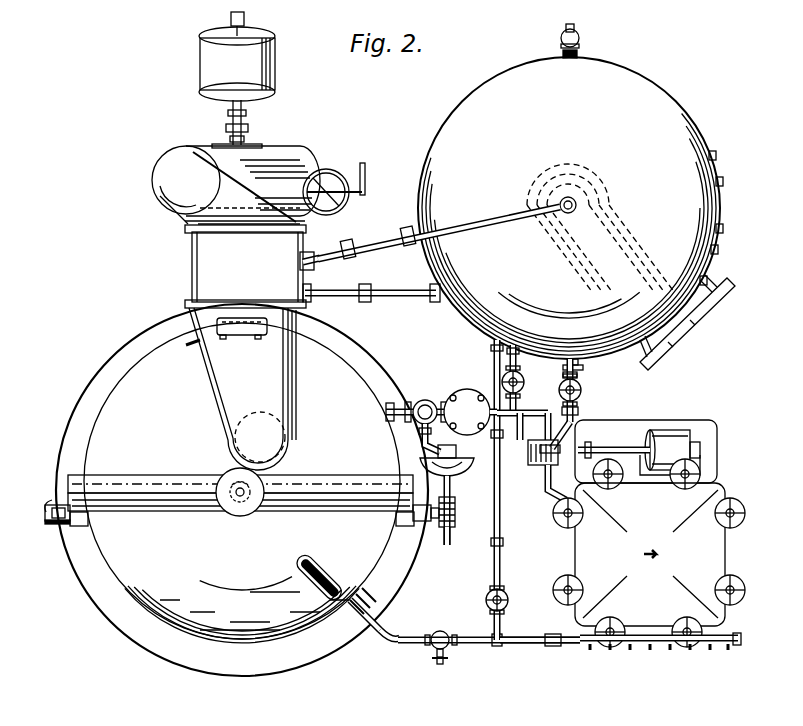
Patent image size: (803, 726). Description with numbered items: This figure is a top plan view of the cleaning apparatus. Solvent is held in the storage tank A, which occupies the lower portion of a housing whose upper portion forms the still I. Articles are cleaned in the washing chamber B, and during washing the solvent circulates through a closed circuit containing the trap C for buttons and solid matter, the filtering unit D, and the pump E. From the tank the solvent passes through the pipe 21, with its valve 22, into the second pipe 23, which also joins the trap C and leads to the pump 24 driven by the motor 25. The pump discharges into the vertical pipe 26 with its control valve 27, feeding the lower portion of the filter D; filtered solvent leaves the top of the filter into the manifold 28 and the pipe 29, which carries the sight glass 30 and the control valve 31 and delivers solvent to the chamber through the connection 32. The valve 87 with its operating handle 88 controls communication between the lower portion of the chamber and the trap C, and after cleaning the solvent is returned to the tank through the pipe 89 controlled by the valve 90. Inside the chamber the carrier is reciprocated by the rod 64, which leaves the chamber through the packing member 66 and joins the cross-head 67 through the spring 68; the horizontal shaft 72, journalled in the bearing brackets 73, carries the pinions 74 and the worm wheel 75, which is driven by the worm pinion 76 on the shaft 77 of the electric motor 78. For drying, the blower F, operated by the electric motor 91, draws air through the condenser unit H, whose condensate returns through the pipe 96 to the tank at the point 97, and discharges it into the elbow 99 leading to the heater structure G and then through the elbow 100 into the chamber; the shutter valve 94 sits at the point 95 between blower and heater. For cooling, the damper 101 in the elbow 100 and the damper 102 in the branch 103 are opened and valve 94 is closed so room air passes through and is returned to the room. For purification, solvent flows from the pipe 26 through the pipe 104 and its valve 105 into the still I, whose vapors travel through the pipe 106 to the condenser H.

The storage tank A is at (653, 104).
The cleaning or washing chamber B is at (242, 490).
The trap C is at (458, 392).
The filtering unit D is at (649, 565).
The pump E is at (497, 517).
The blower unit F is at (300, 154).
The heater structure G is at (195, 265).
The condenser unit H is at (306, 285).
The still I is at (626, 198).
The pipe 21 is at (566, 366).
The valve 22 is at (507, 384).
The second pipe 23 is at (534, 425).
The pump 24 is at (548, 495).
The motor 25 is at (675, 430).
The vertical pipe 26 is at (530, 455).
The control valve 27 is at (552, 462).
The manifold 28 is at (655, 647).
The pipe 29 is at (484, 647).
The sight glass 30 is at (556, 647).
The control valve 31 is at (440, 664).
The connection 32 is at (320, 578).
The rod 64 is at (236, 512).
The packing member 66 is at (252, 505).
The cross-head 67 is at (162, 476).
The spring 68 is at (110, 482).
The horizontal shaft 72 is at (52, 503).
The bearing brackets 73 is at (56, 525).
The pinions 74 is at (90, 530).
The worm wheel 75 is at (448, 544).
The worm pinion 76 is at (455, 516).
The shaft 77 is at (452, 490).
The electric motor 78 is at (464, 462).
The valve 87 is at (416, 400).
The operating handle 88 is at (422, 448).
The pipe 89 is at (493, 356).
The valve 90 is at (486, 600).
The electric motor 91 is at (210, 66).
The valve 94 is at (185, 220).
The point 95 is at (240, 228).
The pipe 96 is at (346, 296).
The point 97 is at (432, 304).
The elbow 99 is at (178, 178).
The elbow 100 is at (242, 389).
The damper 101 is at (232, 324).
The damper 102 is at (342, 204).
The branch 103 is at (338, 172).
The pipe 104 is at (580, 412).
The valve 105 is at (582, 386).
The pipe 106 is at (484, 222).